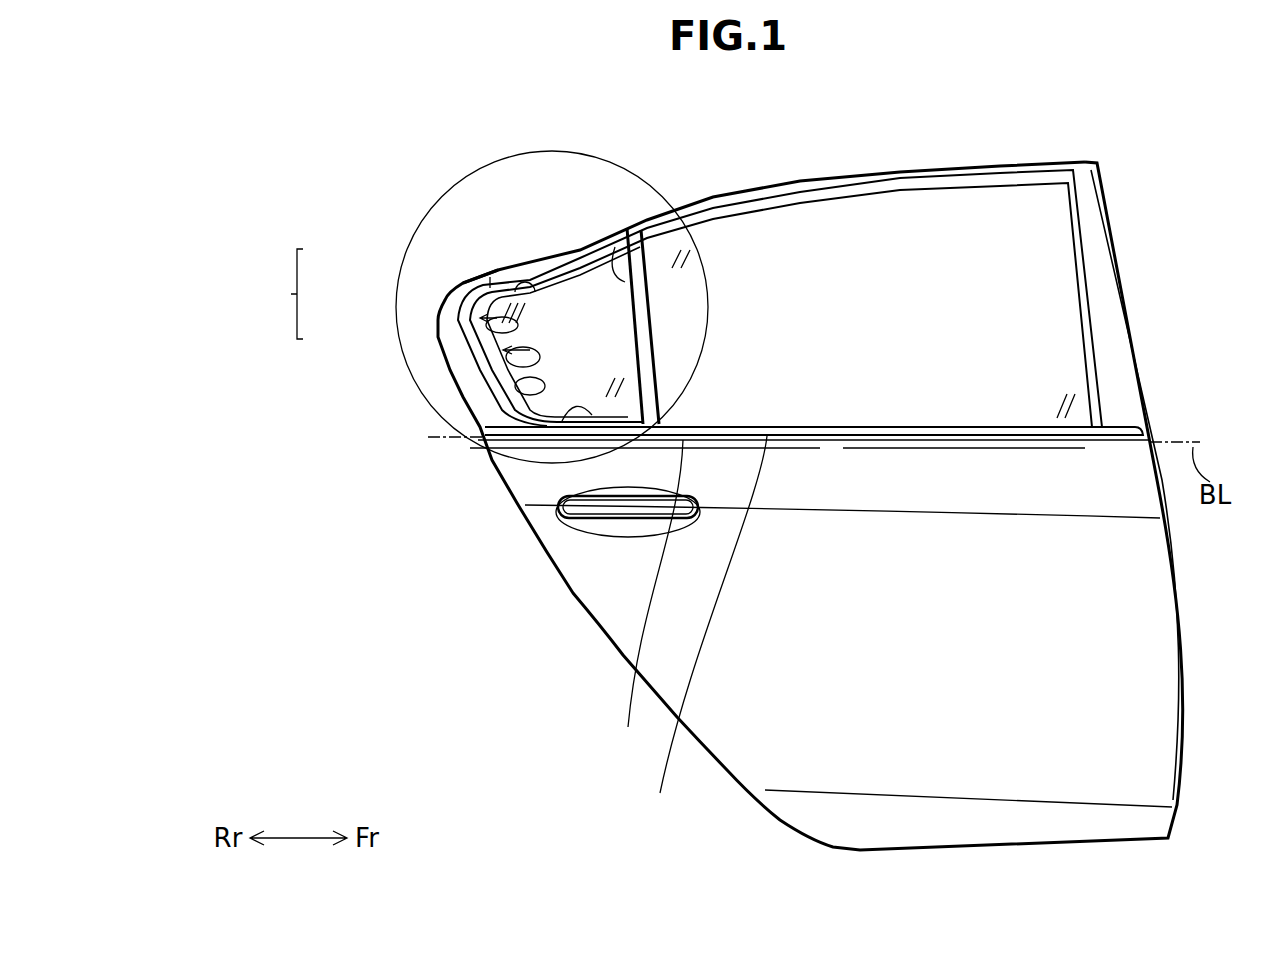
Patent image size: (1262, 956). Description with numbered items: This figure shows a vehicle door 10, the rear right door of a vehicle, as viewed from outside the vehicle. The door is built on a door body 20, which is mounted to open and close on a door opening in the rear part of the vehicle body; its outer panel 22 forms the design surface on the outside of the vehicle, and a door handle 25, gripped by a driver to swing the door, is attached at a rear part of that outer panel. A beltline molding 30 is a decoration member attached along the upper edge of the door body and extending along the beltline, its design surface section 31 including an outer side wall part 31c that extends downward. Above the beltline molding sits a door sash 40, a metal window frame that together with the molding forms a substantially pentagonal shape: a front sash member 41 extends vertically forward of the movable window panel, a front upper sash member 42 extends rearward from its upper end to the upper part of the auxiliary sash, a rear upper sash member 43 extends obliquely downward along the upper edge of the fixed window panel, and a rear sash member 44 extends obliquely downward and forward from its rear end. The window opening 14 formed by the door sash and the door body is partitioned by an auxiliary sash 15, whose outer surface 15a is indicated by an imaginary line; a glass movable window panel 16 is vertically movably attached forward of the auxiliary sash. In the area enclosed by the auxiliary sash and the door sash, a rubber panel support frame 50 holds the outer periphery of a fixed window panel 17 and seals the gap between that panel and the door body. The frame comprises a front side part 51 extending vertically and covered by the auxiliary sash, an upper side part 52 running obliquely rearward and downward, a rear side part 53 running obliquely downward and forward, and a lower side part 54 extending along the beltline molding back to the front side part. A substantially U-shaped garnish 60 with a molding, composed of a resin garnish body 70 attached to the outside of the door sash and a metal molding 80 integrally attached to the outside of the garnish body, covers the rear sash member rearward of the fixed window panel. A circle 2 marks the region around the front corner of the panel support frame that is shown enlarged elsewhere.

The vehicle door 10 is at (254, 160).
The enlarged portion circle (FIG. 2) 2 is at (473, 173).
The window opening 14 is at (861, 328).
The auxiliary sash 15 is at (648, 250).
The outer surface of the auxiliary sash 15a is at (638, 601).
The movable window panel 16 is at (1023, 225).
The fixed window panel 17 is at (593, 283).
The door body 20 is at (623, 655).
The outer panel 22 is at (759, 719).
The door handle 25 is at (620, 515).
The beltline molding 30 is at (998, 420).
The belt line portion 31 is at (1118, 430).
The outer side wall part 31c is at (695, 631).
The door sash 40 is at (912, 172).
The front sash member 41 is at (1120, 265).
The front upper sash member 42 is at (855, 173).
The rear upper sash member 43 is at (553, 243).
The rear sash member 44 is at (475, 375).
The panel support frame 50 is at (480, 367).
The front side part 51 is at (612, 245).
The upper side part 52 is at (502, 273).
The rear side part 53 is at (502, 407).
The lower side part 54 is at (560, 440).
The garnish with molding 60 is at (276, 294).
The garnish body 70 is at (458, 320).
The molding 80 is at (416, 347).